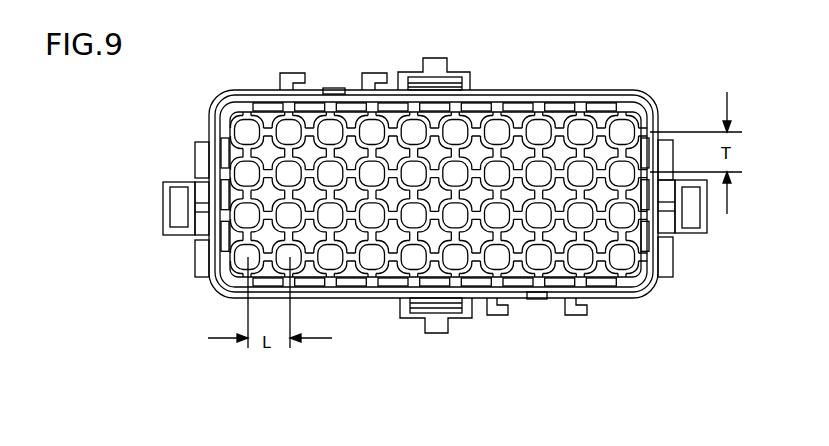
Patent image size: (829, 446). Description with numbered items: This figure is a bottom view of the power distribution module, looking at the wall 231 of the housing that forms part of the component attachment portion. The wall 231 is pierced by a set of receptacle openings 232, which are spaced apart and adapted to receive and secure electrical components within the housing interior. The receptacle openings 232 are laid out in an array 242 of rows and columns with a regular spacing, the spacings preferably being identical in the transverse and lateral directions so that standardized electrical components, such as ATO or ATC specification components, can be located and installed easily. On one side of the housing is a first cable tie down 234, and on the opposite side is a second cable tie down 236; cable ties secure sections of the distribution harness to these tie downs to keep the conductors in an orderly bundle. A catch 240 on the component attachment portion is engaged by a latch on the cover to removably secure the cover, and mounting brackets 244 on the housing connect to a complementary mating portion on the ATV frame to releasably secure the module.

The wall 231 is at (269, 117).
The receptacle openings 232 is at (246, 173).
The first cable tie down 234 is at (163, 213).
The second cable tie down 236 is at (702, 217).
The catch 240 is at (467, 77).
The array 242 is at (475, 212).
The mounting brackets 244 is at (371, 73).